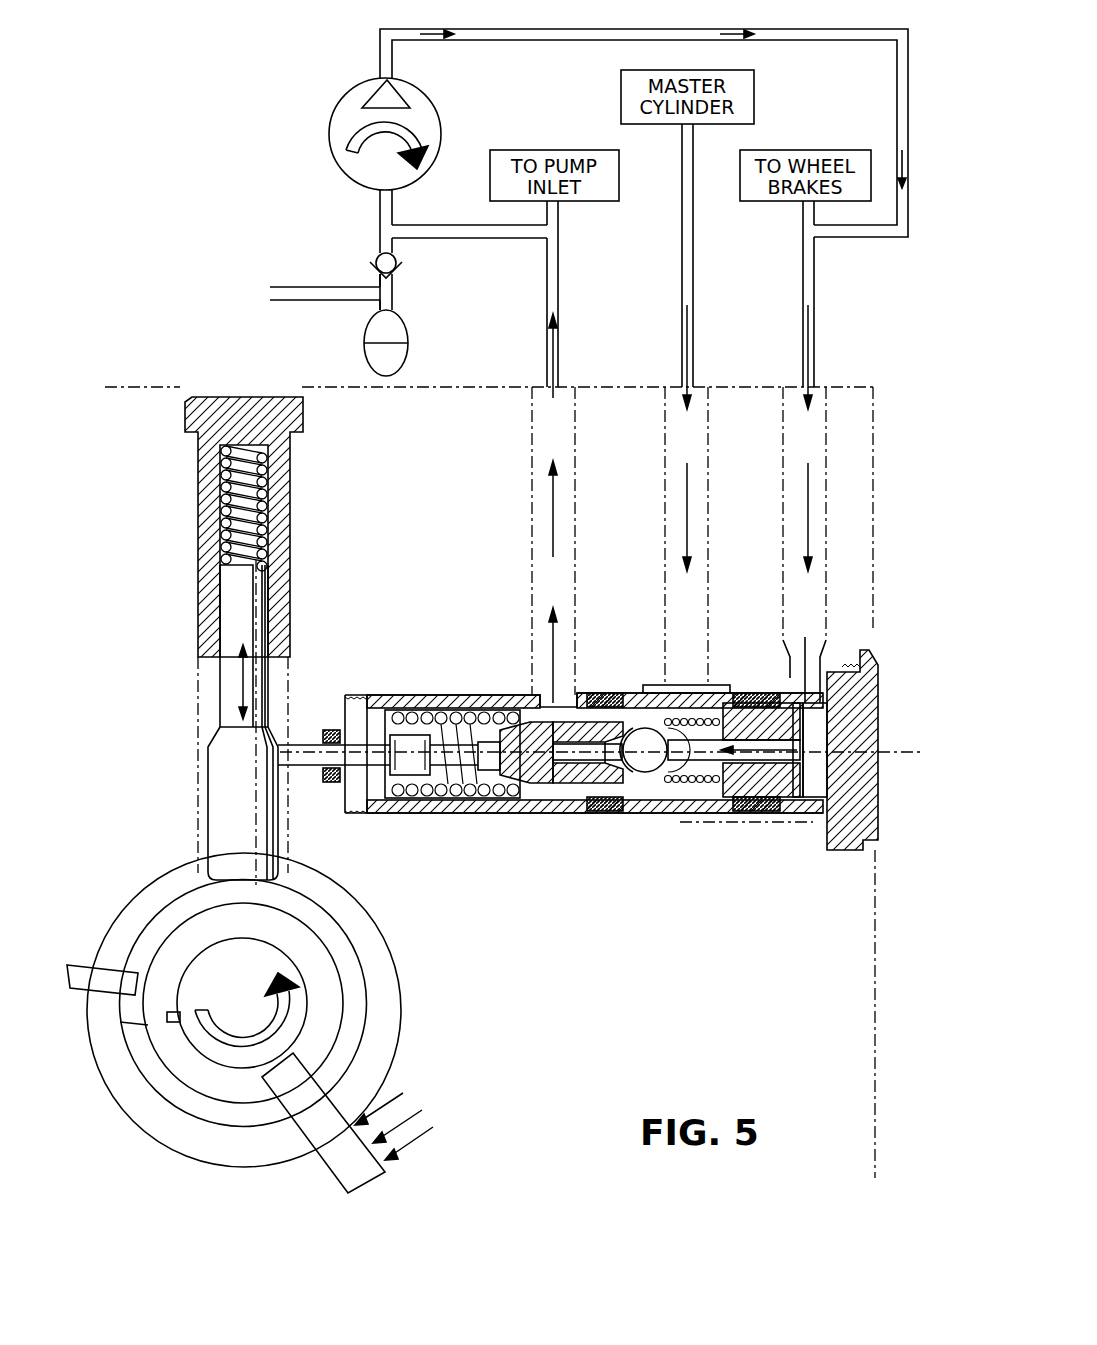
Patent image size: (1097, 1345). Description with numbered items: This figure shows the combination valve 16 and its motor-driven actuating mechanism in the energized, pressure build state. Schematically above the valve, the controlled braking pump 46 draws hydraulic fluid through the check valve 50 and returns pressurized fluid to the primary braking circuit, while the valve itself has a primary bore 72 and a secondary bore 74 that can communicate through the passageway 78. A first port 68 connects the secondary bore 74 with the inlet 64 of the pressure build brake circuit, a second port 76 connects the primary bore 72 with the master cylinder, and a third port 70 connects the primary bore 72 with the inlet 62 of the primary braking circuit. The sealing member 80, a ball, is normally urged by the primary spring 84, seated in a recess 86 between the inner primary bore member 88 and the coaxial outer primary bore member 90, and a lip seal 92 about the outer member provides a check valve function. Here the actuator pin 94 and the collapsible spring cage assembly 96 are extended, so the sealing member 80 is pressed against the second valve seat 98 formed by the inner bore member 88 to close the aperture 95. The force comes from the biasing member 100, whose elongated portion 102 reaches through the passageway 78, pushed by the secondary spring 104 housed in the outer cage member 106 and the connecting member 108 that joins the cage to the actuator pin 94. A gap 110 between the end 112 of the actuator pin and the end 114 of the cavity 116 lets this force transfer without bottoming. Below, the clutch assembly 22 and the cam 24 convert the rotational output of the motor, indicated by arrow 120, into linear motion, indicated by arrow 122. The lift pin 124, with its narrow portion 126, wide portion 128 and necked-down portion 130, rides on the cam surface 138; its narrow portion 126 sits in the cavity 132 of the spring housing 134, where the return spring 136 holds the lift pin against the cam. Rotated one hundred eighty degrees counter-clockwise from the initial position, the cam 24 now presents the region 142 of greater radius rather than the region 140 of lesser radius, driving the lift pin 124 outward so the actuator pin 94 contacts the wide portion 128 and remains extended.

The combination valve 16 is at (877, 846).
The clutch assembly 22 is at (395, 1045).
The cam 24 is at (313, 968).
The controlled braking pump 46 is at (342, 96).
The check valve 50 is at (376, 255).
The inlet of the primary braking circuit 62 is at (818, 645).
The inlet of the pressure build brake circuit 64 is at (547, 495).
The first port 68 is at (540, 705).
The third port 70 is at (822, 703).
The primary bore 72 is at (657, 700).
The secondary bore 74 is at (562, 768).
The second port 76 is at (697, 697).
The passageway 78 is at (637, 813).
The sealing member 80 is at (637, 722).
The primary spring 84 is at (713, 773).
The recess 86 is at (692, 783).
The inner primary bore member 88 is at (777, 773).
The outer primary bore member 90 is at (790, 700).
The lip seal 92 is at (760, 813).
The actuator pin 94 is at (293, 760).
The aperture 95 is at (723, 753).
The spring cage assembly 96 is at (428, 715).
The second valve seat 98 is at (658, 807).
The biasing member 100 is at (535, 773).
The elongated portion 102 is at (587, 787).
The secondary spring 104 is at (445, 712).
The outer cage member 106 is at (447, 815).
The connecting member 108 is at (380, 715).
The gap 110 is at (490, 718).
The end of the actuator pin 112 is at (470, 797).
The end of the cavity 114 is at (497, 773).
The cavity 116 is at (487, 777).
The arrow of rotational output 120 is at (223, 1020).
The arrow of linear motion 122 is at (240, 697).
The lift pin 124 is at (222, 803).
The narrow portion 126 is at (215, 683).
The wide portion 128 is at (208, 830).
The necked-down portion 130 is at (215, 782).
The cavity 132 is at (227, 485).
The spring housing 134 is at (210, 395).
The return spring 136 is at (227, 562).
The cam surface 138 is at (158, 973).
The region of lesser radius 140 is at (185, 1140).
The region of greater radius 142 is at (280, 883).